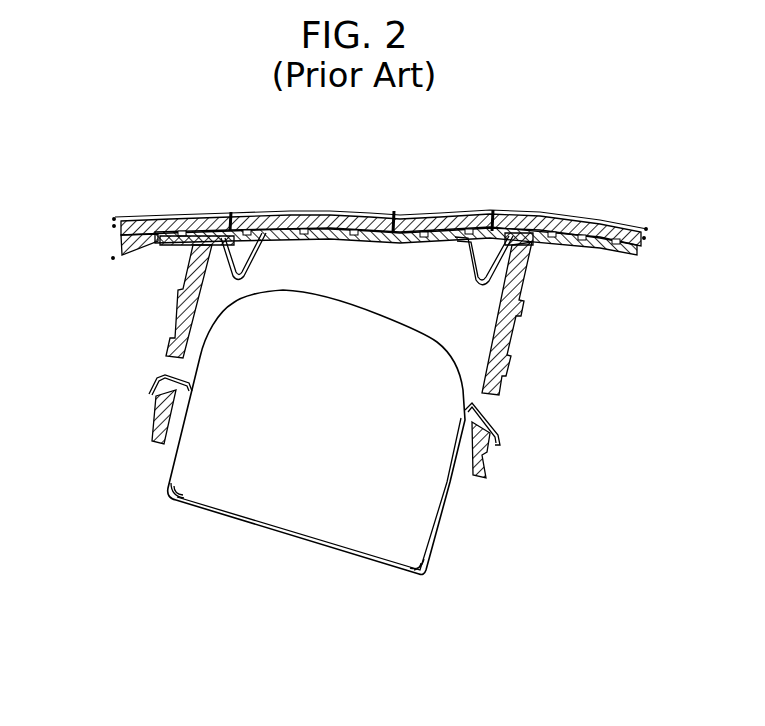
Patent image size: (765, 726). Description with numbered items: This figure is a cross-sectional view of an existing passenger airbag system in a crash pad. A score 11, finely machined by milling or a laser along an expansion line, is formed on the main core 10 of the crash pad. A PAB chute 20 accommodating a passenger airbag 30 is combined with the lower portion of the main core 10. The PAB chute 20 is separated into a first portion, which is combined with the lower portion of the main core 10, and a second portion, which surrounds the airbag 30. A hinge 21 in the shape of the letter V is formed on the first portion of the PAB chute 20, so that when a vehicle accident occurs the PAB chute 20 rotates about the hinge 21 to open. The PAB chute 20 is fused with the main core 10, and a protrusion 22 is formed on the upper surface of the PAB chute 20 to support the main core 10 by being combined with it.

The main core 10 is at (137, 221).
The score 11 is at (361, 212).
The PAB chute 20 is at (505, 358).
The hinge 21 is at (471, 274).
The protrusion 22 is at (580, 245).
The passenger airbag 30 is at (330, 451).